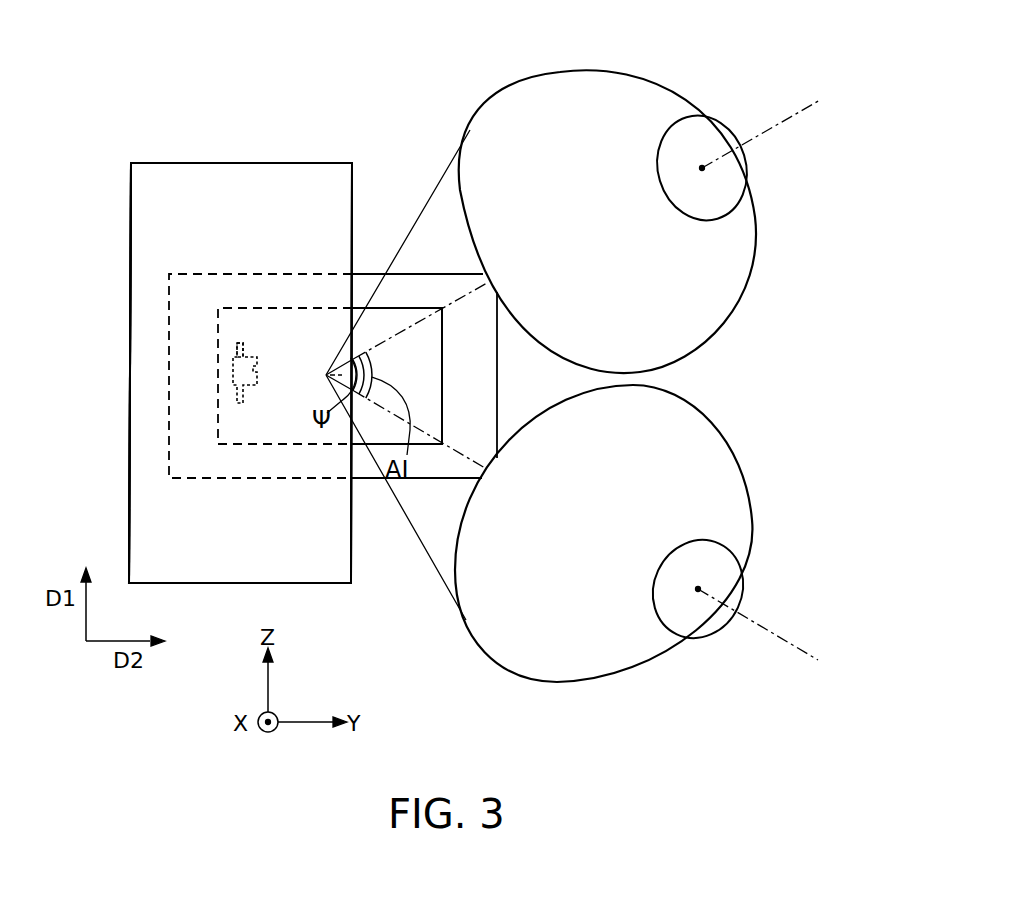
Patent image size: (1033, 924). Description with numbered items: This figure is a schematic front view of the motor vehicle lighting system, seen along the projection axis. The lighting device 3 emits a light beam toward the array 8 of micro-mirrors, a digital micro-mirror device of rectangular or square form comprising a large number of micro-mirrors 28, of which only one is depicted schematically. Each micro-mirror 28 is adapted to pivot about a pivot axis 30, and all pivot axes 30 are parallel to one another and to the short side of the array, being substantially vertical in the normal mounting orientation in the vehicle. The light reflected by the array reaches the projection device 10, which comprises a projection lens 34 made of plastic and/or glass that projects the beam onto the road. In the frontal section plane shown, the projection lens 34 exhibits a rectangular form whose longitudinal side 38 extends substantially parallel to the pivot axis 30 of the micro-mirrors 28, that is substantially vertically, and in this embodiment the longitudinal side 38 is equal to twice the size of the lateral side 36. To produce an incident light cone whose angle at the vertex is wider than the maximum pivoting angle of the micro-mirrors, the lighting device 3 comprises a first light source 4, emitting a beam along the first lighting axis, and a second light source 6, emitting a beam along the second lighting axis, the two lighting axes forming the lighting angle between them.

The lighting device 3 is at (623, 716).
The first light source 4 is at (573, 672).
The second light source 6 is at (577, 80).
The array of micro-mirrors 8 is at (263, 322).
The projection device 10 is at (272, 180).
The projection lens 34 is at (272, 180).
The lateral side 36 is at (172, 163).
The longitudinal side 38 is at (130, 232).
The micro-mirror 28 is at (258, 374).
The pivot axis 30 is at (243, 343).